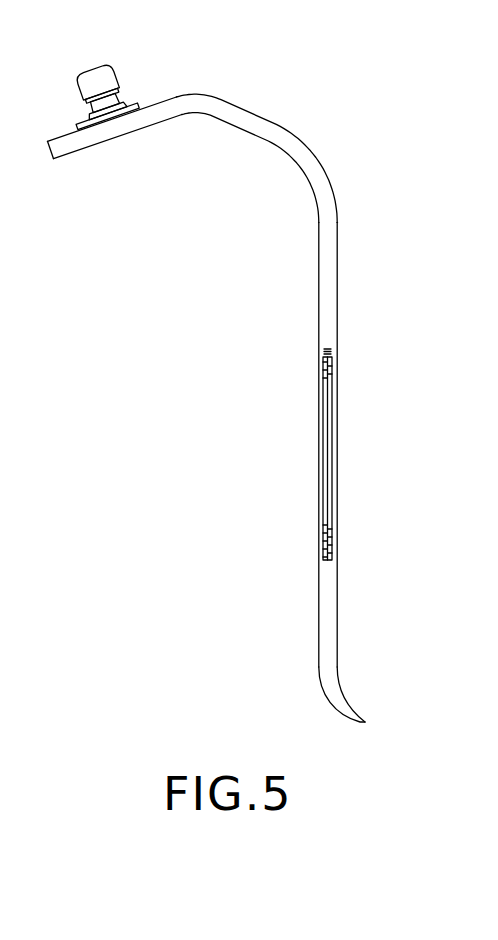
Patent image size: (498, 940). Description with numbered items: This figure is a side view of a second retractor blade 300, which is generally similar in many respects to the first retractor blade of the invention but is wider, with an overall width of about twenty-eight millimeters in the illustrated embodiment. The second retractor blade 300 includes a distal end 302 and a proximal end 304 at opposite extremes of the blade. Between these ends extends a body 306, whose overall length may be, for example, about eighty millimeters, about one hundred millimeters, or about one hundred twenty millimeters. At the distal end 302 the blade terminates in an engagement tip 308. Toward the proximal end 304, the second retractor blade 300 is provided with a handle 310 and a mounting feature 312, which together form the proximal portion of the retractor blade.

The second retractor blade 300 is at (216, 476).
The distal end 302 is at (245, 677).
The proximal end 304 is at (123, 185).
The body 306 is at (316, 402).
The engagement tip 308 is at (366, 722).
The handle 310 is at (257, 117).
The mounting feature 312 is at (135, 70).